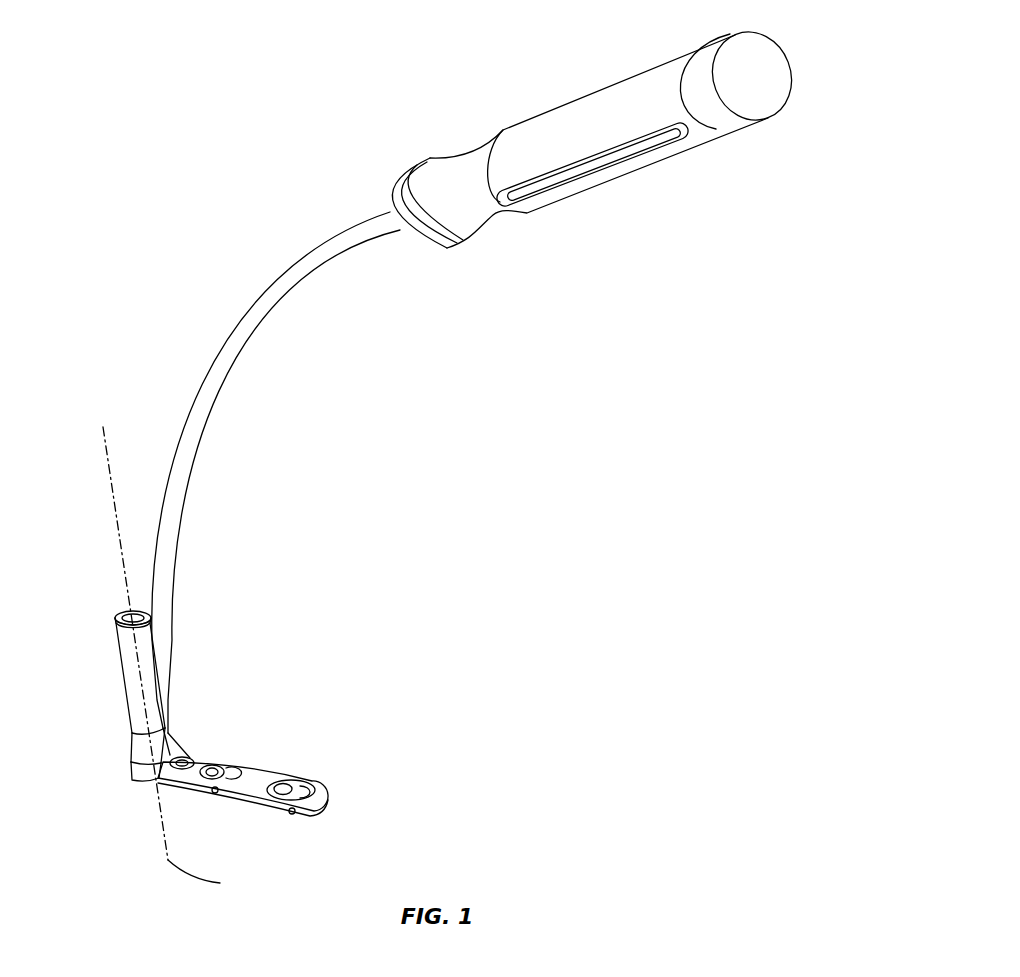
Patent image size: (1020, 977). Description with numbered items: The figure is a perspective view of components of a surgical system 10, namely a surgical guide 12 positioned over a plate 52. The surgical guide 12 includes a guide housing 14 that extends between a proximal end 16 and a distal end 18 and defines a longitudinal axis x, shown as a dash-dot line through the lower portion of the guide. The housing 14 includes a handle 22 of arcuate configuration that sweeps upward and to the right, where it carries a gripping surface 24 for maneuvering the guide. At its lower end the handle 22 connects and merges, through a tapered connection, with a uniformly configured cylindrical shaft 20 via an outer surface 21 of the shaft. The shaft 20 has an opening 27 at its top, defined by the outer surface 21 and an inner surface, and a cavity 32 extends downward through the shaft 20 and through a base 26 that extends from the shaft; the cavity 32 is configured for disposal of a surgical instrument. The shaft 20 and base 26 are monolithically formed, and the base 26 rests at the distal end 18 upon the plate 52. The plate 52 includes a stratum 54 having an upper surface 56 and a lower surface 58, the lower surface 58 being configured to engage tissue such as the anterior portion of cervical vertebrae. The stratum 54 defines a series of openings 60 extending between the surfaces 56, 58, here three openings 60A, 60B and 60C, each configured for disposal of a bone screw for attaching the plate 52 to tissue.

The surgical system 10 is at (178, 37).
The surgical guide 12 is at (223, 165).
The guide housing 14 is at (83, 687).
The proximal end 16 is at (113, 625).
The distal end 18 is at (137, 780).
The shaft 20 is at (135, 693).
The outer surface 21 is at (147, 650).
The handle 22 is at (305, 262).
The gripping surface 24 is at (638, 167).
The base 26 is at (138, 752).
The opening 27 is at (128, 612).
The cavity 32 is at (137, 597).
The plate 52 is at (345, 778).
The stratum 54 is at (252, 787).
The upper surface 56 is at (257, 772).
The lower surface 58 is at (189, 800).
The openings 60 is at (287, 780).
The first opening 60A is at (187, 757).
The second opening 60B is at (215, 792).
The third opening 60C is at (278, 797).